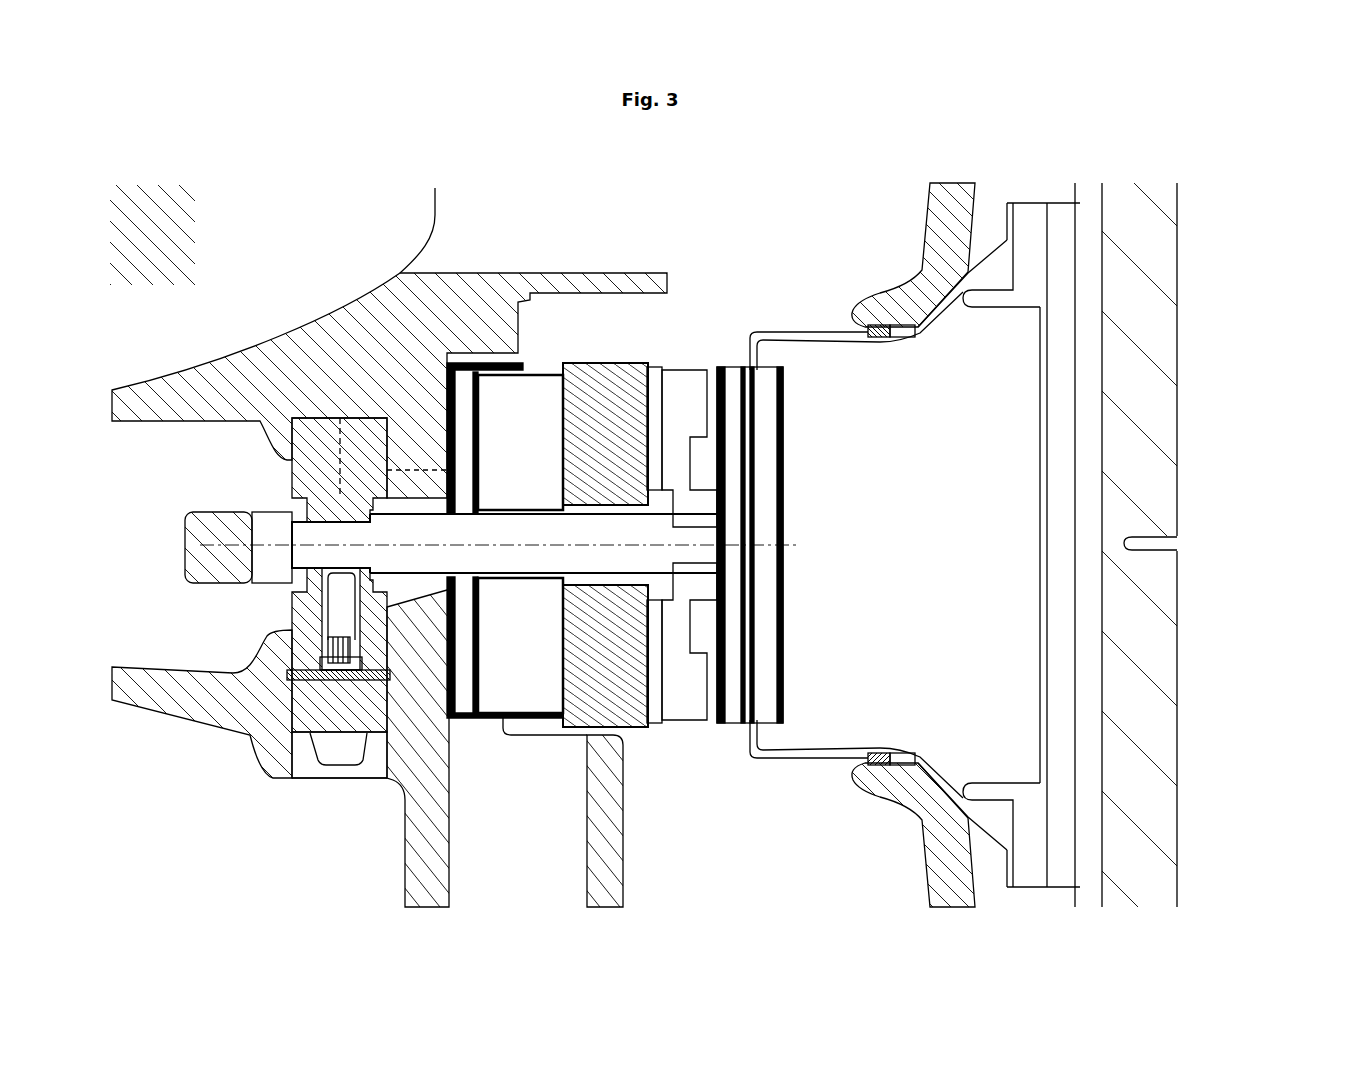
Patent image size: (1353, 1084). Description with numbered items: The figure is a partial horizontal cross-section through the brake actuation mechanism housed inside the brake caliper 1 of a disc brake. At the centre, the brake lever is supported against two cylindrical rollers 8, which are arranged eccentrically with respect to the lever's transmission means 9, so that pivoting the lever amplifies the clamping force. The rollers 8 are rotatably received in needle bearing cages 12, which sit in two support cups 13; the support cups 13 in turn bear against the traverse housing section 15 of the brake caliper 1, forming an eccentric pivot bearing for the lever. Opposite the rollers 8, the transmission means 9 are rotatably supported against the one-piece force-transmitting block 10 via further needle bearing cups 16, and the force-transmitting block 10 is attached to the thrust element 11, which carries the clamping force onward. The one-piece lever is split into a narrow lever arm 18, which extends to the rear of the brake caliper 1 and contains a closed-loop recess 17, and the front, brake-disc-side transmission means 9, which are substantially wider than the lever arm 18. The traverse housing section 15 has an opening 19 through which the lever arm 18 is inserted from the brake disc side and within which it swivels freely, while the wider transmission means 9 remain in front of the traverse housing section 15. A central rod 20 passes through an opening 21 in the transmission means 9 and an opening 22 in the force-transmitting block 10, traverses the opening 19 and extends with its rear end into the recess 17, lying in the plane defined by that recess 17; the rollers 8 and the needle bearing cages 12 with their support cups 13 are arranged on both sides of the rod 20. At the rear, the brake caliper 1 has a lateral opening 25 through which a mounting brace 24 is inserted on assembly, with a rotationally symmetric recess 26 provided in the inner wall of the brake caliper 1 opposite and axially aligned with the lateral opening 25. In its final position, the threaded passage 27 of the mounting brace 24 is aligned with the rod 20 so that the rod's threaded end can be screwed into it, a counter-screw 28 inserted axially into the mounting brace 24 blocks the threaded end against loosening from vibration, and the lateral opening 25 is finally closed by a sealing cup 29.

The brake caliper 1 is at (213, 388).
The cylindrical rollers 8 is at (508, 403).
The transmission means 9 is at (640, 723).
The force-transmitting block 10 is at (683, 702).
The thrust element 11 is at (953, 443).
The needle bearing cage 12 is at (475, 372).
The support cups 13 is at (455, 372).
The traverse housing section 15 is at (428, 735).
The needle bearing cups 16 is at (653, 703).
The recess 17 is at (270, 567).
The lever arm 18 is at (197, 557).
The opening 19 is at (400, 500).
The central rod 20 is at (593, 538).
The opening 21 is at (697, 505).
The opening 22 is at (743, 475).
The mounting brace 24 is at (318, 450).
The lateral opening 25 is at (370, 765).
The rotationally symmetric recess 26 is at (365, 410).
The threaded passage 27 is at (315, 530).
The counter-screw 28 is at (327, 620).
The sealing cup 29 is at (313, 707).